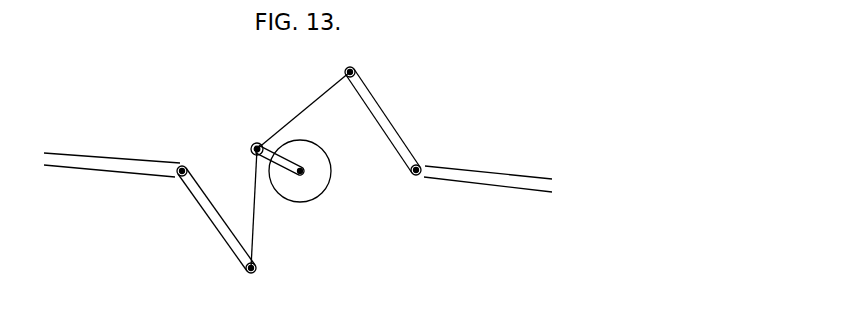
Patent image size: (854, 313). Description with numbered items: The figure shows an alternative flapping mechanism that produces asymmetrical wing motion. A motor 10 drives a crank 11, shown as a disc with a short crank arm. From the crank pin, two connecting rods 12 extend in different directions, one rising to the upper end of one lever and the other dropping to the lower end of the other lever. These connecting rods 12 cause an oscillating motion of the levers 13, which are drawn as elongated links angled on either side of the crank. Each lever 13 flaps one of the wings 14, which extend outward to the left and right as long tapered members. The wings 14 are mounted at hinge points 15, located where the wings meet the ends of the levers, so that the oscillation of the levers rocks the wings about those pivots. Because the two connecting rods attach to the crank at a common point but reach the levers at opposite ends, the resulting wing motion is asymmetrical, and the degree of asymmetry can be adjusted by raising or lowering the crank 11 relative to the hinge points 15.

The motor 10 is at (319, 195).
The crank 11 is at (254, 142).
The connecting rods 12 is at (313, 102).
The levers 13 is at (216, 232).
The wings 14 is at (97, 157).
The hinge points 15 is at (182, 165).